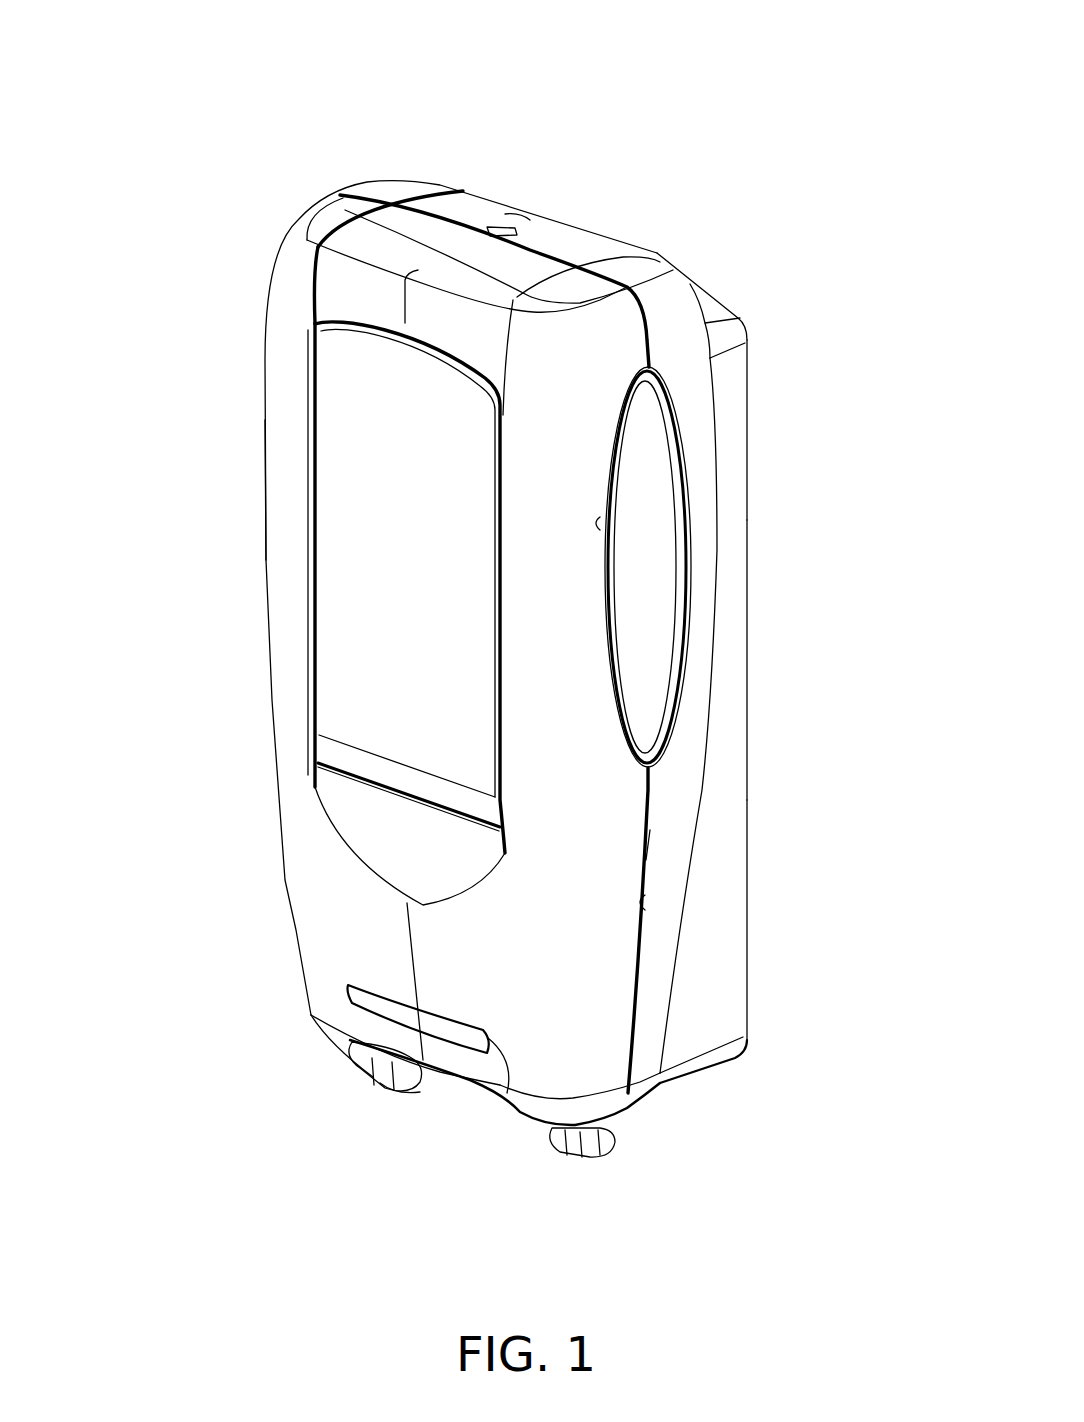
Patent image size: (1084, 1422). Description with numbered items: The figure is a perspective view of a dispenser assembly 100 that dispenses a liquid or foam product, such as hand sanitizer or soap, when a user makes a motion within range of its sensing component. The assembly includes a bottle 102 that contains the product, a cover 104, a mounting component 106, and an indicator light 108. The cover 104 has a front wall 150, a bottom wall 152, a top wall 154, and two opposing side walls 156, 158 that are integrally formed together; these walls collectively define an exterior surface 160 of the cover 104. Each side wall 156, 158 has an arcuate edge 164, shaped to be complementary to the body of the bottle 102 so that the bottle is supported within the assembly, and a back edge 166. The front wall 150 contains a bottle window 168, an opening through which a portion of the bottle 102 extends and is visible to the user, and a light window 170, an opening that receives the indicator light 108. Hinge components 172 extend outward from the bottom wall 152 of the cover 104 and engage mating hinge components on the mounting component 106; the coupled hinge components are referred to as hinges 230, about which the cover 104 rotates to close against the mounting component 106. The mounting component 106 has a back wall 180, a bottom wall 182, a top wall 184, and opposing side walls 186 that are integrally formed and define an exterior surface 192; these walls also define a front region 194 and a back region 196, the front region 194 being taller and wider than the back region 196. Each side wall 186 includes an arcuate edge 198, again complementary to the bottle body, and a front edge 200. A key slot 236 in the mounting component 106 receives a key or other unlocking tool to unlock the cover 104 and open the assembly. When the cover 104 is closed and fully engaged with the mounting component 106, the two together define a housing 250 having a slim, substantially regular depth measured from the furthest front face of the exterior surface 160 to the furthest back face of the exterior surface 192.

The dispenser assembly 100 is at (805, 80).
The bottle 102 is at (410, 576).
The cover 104 is at (282, 292).
The mounting component 106 is at (737, 373).
The indicator light 108 is at (505, 1100).
The front wall 150 is at (317, 922).
The bottom wall 152 is at (503, 1090).
The top wall 154 is at (490, 266).
The side wall 156 is at (612, 330).
The side wall 158 is at (305, 840).
The exterior surface 160 is at (277, 483).
The arcuate edge 164 is at (600, 517).
The back edge 166 is at (648, 912).
The bottle window 168 is at (490, 463).
The light window 170 is at (440, 1052).
The hinge components 172 is at (380, 1083).
The back wall 180 is at (748, 630).
The bottom wall 182 is at (710, 1070).
The top wall 184 is at (513, 213).
The side wall 186 is at (680, 310).
The exterior surface 192 is at (723, 1023).
The front region 194 is at (663, 244).
The back region 196 is at (768, 306).
The arcuate edge 198 is at (680, 705).
The front edge 200 is at (648, 842).
The hinges 230 is at (395, 1112).
The key slot 236 is at (488, 225).
The housing 250 is at (268, 422).